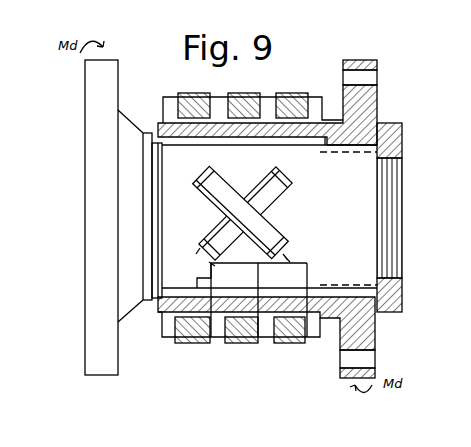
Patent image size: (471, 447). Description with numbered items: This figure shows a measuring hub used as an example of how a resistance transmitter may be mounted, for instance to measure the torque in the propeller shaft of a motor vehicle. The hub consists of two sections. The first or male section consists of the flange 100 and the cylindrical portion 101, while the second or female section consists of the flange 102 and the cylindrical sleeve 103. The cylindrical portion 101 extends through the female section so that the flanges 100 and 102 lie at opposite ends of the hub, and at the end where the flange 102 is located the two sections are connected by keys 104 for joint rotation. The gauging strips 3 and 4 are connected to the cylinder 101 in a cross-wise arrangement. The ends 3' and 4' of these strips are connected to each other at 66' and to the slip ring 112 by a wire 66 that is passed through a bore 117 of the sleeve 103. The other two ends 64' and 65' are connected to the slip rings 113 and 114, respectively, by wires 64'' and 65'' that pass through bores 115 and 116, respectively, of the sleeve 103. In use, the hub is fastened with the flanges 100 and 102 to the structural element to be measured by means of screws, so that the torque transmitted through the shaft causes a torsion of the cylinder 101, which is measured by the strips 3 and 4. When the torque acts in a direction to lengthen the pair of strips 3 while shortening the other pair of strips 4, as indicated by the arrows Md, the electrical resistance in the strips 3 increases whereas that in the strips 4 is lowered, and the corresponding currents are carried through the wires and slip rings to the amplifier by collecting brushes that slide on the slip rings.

The flange 100 is at (95, 122).
The cylindrical portion 101 is at (357, 180).
The flange 102 is at (365, 100).
The cylindrical sleeve 103 is at (152, 307).
The keys 104 is at (376, 318).
The slip ring 112 is at (240, 95).
The slip ring 113 is at (190, 95).
The slip ring 114 is at (289, 95).
The bore 115 is at (211, 337).
The bore 116 is at (309, 337).
The bore 117 is at (258, 337).
The gauging strips 3 is at (254, 213).
The gauging strips 4 is at (234, 212).
The end 3' is at (285, 239).
The end 4' is at (225, 257).
The end 64' is at (309, 249).
The wire 64'' is at (185, 272).
The end 65' is at (187, 238).
The wire 65'' is at (327, 300).
The wire 66 is at (259, 300).
The connection 66' is at (273, 300).